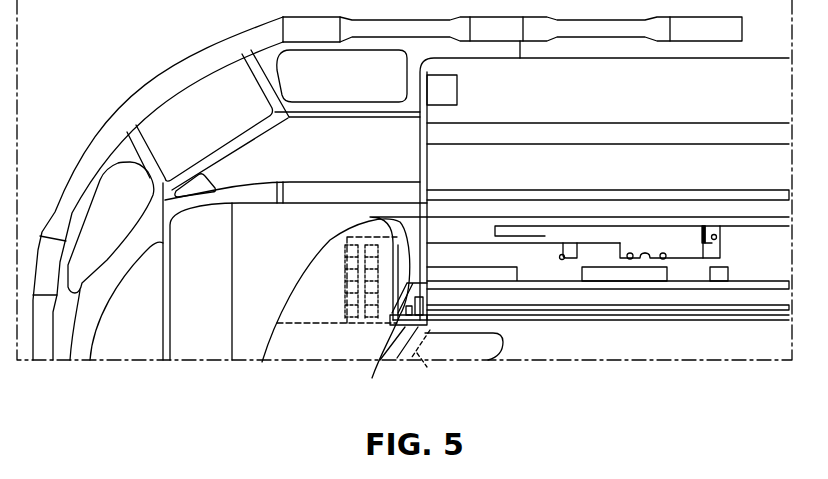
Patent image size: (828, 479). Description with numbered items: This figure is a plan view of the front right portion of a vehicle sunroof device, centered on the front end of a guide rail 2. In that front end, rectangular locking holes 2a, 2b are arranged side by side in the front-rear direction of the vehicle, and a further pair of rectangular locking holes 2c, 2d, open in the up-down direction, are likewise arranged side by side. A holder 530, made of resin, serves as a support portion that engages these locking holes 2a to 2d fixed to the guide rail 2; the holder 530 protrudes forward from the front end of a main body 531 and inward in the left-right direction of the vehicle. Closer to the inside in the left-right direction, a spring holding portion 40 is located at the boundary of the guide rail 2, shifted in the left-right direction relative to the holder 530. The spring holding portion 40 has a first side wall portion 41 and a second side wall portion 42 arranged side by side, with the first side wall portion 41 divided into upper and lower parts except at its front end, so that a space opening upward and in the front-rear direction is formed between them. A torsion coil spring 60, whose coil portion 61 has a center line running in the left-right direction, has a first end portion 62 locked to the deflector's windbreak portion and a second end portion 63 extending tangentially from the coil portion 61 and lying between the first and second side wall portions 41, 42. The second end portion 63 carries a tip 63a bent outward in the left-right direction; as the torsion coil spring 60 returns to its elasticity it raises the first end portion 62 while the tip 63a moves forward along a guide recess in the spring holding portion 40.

The guide rail 2 is at (752, 320).
The rectangular locking hole 2a is at (561, 259).
The rectangular locking hole 2b is at (630, 259).
The rectangular locking hole 2c is at (664, 259).
The rectangular locking hole 2d is at (716, 238).
The spring holding portion 40 is at (440, 322).
The first side wall portion 41 is at (372, 217).
The second side wall portion 42 is at (387, 343).
The torsion coil spring 60 is at (323, 292).
The coil portion 61 is at (345, 268).
The first end portion 62 is at (345, 248).
The second end portion 63 is at (380, 360).
The tip 63a is at (425, 370).
The holder 530 is at (685, 247).
The main body 531 is at (693, 247).